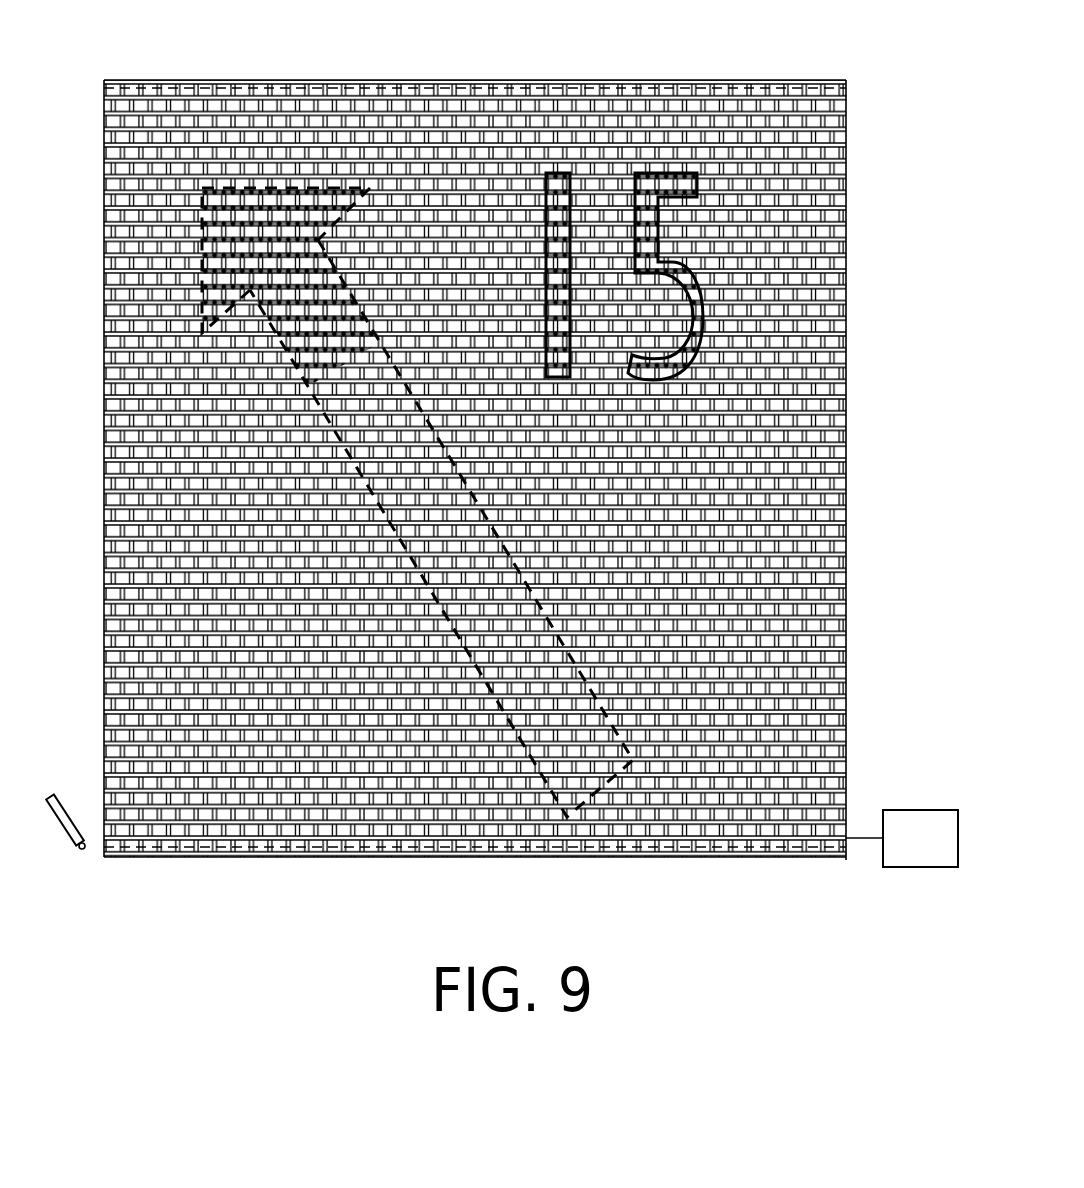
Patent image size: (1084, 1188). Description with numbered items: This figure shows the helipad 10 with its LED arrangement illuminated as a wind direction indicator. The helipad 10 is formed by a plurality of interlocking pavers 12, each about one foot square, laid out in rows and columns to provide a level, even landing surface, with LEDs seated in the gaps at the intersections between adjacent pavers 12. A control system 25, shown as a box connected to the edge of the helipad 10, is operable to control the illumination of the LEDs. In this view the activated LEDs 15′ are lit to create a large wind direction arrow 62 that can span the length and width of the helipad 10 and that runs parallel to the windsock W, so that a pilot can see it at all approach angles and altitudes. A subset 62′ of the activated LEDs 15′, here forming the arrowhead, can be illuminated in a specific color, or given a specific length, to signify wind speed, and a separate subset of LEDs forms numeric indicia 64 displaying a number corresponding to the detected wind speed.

The helipad 10 is at (858, 348).
The paver 12 is at (840, 230).
The activated LEDs 15′ is at (283, 190).
The control system 25 is at (921, 800).
The wind direction arrow 62 is at (608, 712).
The subset of activated LEDs 62′ is at (335, 190).
The numeric indicia 64 is at (560, 172).
The windsock W is at (63, 830).